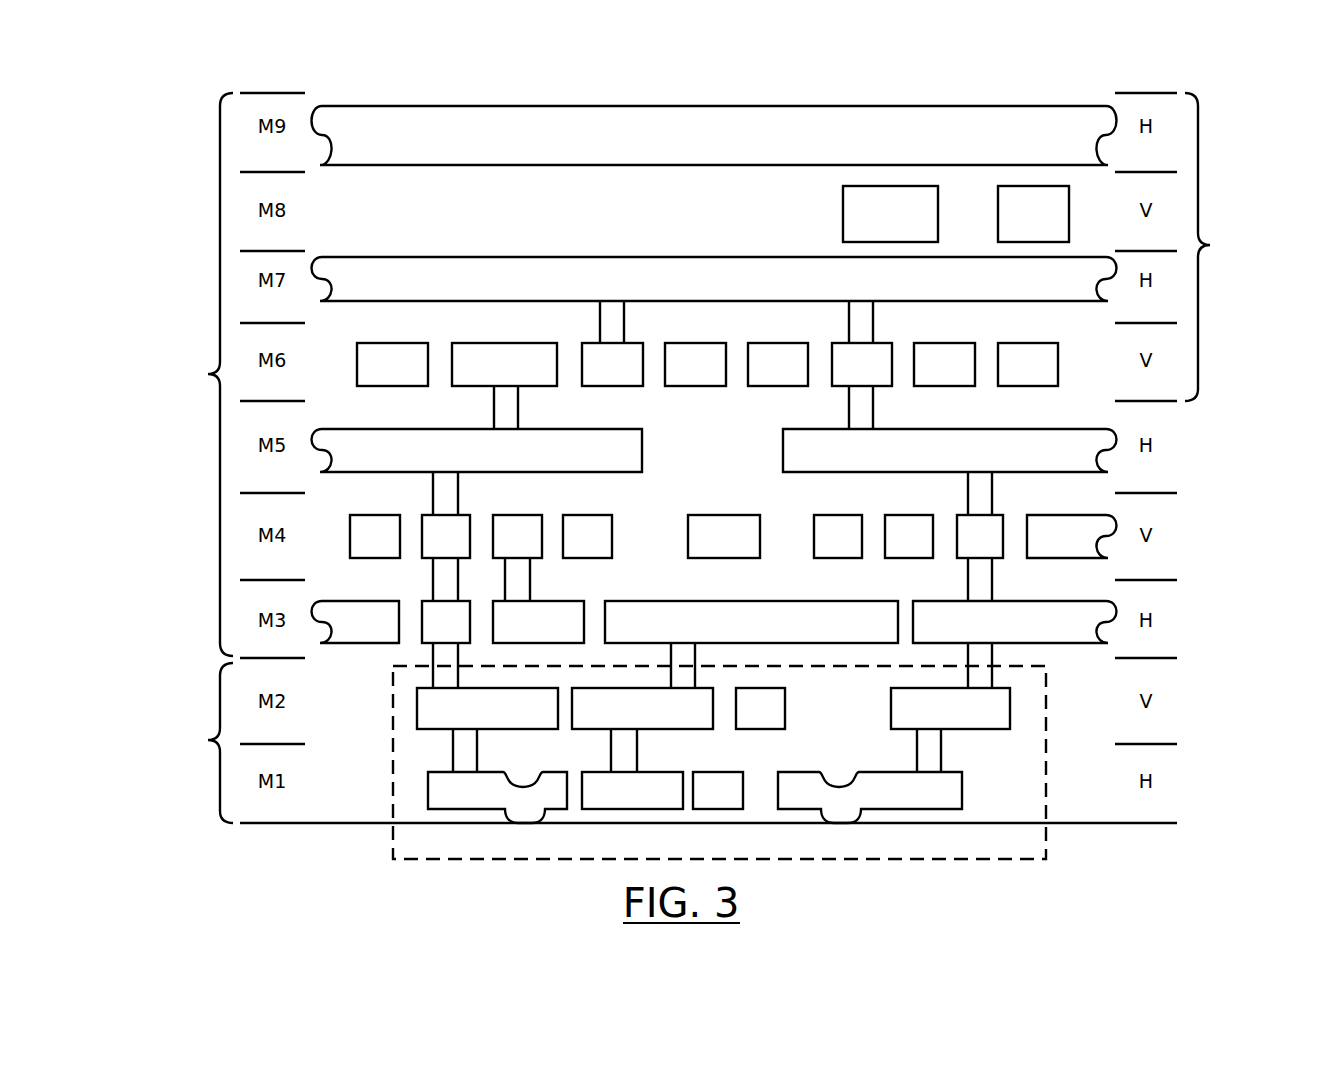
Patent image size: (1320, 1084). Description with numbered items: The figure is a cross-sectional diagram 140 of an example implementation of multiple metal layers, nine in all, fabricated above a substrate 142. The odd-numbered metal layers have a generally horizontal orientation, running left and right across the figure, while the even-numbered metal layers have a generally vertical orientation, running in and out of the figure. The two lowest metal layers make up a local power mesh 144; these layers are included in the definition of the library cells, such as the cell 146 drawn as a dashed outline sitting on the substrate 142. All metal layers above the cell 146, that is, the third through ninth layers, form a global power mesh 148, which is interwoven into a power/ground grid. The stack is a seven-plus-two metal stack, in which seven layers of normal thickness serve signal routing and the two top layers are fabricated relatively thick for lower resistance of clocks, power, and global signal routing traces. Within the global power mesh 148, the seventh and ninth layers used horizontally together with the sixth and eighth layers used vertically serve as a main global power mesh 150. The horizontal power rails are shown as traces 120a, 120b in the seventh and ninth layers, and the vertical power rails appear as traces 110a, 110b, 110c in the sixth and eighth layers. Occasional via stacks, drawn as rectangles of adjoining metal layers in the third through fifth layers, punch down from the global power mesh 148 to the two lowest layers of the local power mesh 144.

The cross-sectional diagram 140 is at (209, 133).
The substrate 142 is at (706, 860).
The local power mesh 144 is at (183, 743).
The cell 146 is at (851, 860).
The global power mesh 148 is at (181, 374).
The main global power mesh 150 is at (1238, 247).
The trace 110a is at (504, 364).
The trace 110b is at (890, 214).
The trace 110c is at (1033, 214).
The trace 120a is at (714, 279).
The trace 120b is at (714, 135).